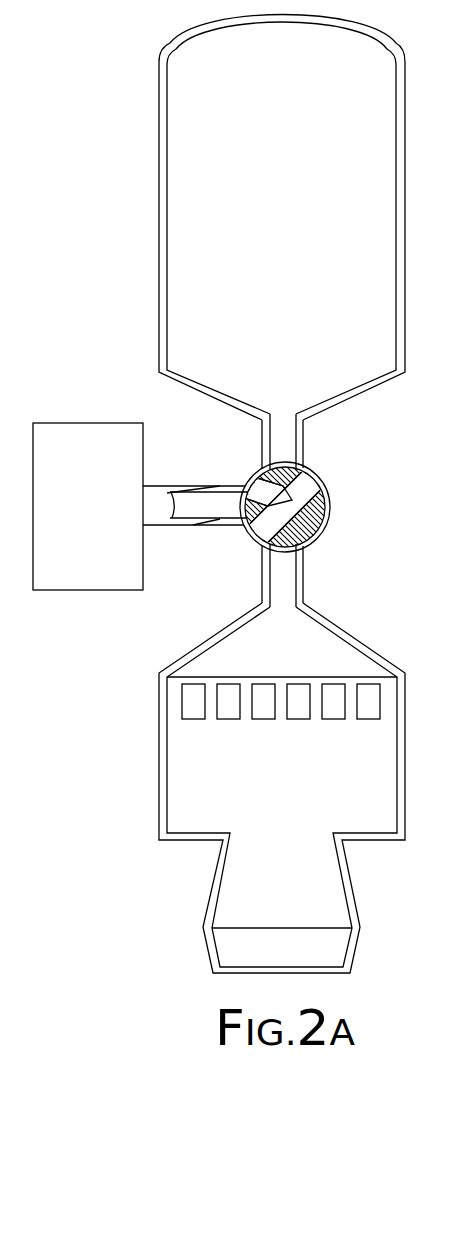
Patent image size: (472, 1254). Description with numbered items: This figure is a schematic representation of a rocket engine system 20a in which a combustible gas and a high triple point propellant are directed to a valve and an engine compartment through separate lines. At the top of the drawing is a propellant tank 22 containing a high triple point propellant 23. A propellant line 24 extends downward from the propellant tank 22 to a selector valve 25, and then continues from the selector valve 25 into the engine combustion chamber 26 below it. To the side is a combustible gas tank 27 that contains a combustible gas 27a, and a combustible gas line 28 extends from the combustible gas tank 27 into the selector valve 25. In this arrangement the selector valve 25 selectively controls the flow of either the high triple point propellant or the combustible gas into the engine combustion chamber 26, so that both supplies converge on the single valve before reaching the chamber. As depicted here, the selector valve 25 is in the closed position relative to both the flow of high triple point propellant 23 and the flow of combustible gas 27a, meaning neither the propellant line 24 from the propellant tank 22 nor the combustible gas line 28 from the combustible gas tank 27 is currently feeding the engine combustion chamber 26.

The rocket engine system 20a is at (125, 318).
The propellant tank 22 is at (404, 207).
The high triple point propellant 23 is at (353, 102).
The propellant line 24 is at (303, 437).
The selector valve 25 is at (330, 517).
The engine combustion chamber 26 is at (159, 738).
The combustible gas tank 27 is at (78, 422).
The combustible gas 27a is at (92, 555).
The combustible gas line 28 is at (218, 486).